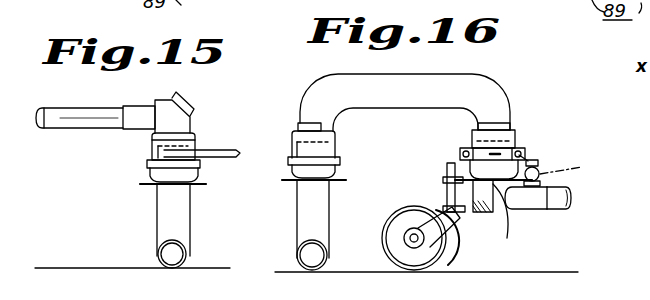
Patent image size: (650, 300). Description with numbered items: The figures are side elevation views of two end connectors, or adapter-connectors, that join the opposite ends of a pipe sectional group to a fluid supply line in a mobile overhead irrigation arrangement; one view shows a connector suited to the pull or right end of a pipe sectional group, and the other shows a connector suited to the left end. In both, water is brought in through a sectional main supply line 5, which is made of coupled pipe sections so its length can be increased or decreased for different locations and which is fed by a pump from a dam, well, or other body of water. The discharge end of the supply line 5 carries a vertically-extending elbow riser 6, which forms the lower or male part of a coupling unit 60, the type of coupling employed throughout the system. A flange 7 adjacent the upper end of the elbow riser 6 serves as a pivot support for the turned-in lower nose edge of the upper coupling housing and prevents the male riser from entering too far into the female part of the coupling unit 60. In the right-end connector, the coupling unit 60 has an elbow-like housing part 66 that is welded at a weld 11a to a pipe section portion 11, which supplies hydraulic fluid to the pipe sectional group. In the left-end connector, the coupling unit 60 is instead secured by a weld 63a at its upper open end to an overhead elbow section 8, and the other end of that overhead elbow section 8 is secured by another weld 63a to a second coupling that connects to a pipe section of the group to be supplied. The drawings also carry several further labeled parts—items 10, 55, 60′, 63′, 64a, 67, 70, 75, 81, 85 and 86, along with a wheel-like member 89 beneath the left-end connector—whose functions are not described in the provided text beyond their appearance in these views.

In FIG. 15, the sectional main supply line 5 is at (158, 265).
In FIG. 16, the sectional main supply line 5 is at (327, 260).
In FIG. 15, the elbow riser 6 is at (200, 147).
In FIG. 16, the elbow riser 6 is at (337, 152).
In FIG. 15, the flange 7 is at (145, 186).
In FIG. 16, the flange 7 is at (346, 180).
In FIG. 16, the overhead elbow section 8 is at (447, 84).
In FIG. 15, the tube 10 is at (63, 108).
In FIG. 16, the tube 10 is at (572, 199).
In FIG. 15, the pipe section portion 11 is at (64, 128).
In FIG. 16, the pipe section portion 11 is at (560, 208).
In FIG. 15, the weld 11a is at (120, 107).
In FIG. 16, the tube 55 is at (530, 210).
In FIG. 15, the coupling unit 60 is at (152, 154).
In FIG. 16, the coupling unit 60 is at (294, 148).
In FIG. 16, the ball joint 60′ is at (540, 166).
In FIG. 15, the weld 63a is at (192, 136).
In FIG. 16, the weld 63a is at (305, 123).
In FIG. 16, the block 63′ is at (480, 214).
In FIG. 15, the collar 64a is at (150, 174).
In FIG. 16, the collar 64a is at (340, 170).
In FIG. 15, the elbow-like housing part 66 is at (143, 107).
In FIG. 16, the bolts 67 is at (461, 150).
In FIG. 16, the axis line 70 is at (614, 179).
In FIG. 15, the arm 75 is at (229, 160).
In FIG. 16, the pivot arm 81 is at (506, 232).
In FIG. 16, the post 85 is at (447, 165).
In FIG. 16, the fork 86 is at (448, 250).
In FIG. 16, the caster wheel 89 is at (428, 201).